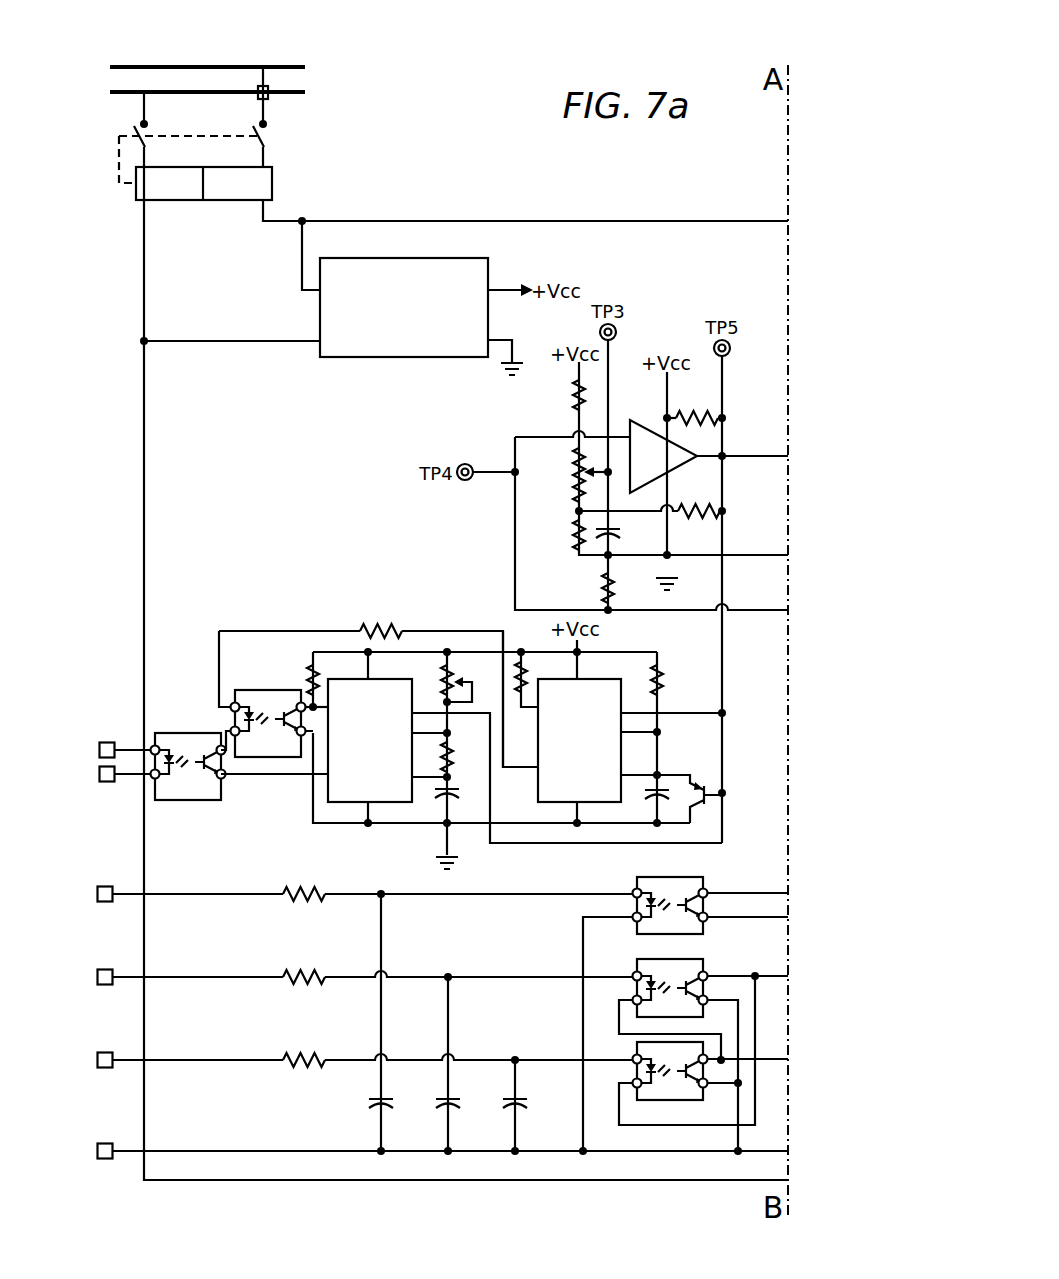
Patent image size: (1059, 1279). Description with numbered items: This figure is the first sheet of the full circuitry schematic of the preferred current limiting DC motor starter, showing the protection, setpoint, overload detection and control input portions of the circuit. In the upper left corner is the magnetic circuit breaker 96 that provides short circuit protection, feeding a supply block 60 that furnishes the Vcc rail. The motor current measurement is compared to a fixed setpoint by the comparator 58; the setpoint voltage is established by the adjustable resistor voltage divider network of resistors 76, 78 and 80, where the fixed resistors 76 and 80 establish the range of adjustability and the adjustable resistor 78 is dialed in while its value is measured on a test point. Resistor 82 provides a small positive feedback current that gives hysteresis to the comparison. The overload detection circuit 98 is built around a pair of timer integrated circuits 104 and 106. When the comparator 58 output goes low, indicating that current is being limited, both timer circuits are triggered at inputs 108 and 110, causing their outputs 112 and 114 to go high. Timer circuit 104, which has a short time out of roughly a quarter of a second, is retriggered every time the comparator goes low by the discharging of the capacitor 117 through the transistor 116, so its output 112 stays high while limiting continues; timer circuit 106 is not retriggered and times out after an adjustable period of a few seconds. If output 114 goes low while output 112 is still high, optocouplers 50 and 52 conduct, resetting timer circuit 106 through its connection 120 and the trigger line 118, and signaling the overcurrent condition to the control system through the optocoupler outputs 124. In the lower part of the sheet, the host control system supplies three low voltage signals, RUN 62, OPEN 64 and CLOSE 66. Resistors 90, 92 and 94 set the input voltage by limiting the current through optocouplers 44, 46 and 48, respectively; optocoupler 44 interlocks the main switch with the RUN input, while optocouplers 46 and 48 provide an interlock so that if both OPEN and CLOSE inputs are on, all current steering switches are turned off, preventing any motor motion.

The magnetic circuit breaker 96 is at (322, 138).
The power supply 60 is at (404, 307).
The fixed resistor 80 is at (574, 397).
The comparator 58 is at (662, 440).
The adjustable resistor 78 is at (574, 470).
The fixed resistor 76 is at (572, 528).
The resistor 82 is at (700, 506).
The control circuit 98 is at (381, 589).
The optocoupler 50 is at (267, 690).
The optocoupler 52 is at (190, 790).
The input line 120 is at (330, 707).
The timer circuit 106 is at (370, 740).
The timer circuit 104 is at (579, 740).
The trigger input 110 is at (470, 715).
The trigger input 118 is at (540, 707).
The trigger input 108 is at (684, 713).
The transistor 116 is at (701, 785).
The optocoupler outputs 124 is at (100, 774).
The timer output 114 is at (250, 777).
The timer output 112 is at (517, 769).
The capacitor 117 is at (640, 797).
The RUN input 62 is at (98, 894).
The OPEN input 64 is at (98, 977).
The CLOSE input 66 is at (98, 1060).
The resistor 90 is at (302, 901).
The resistor 92 is at (291, 985).
The resistor 94 is at (291, 1070).
The optocoupler 44 is at (676, 882).
The optocoupler 46 is at (689, 965).
The optocoupler 48 is at (645, 1051).